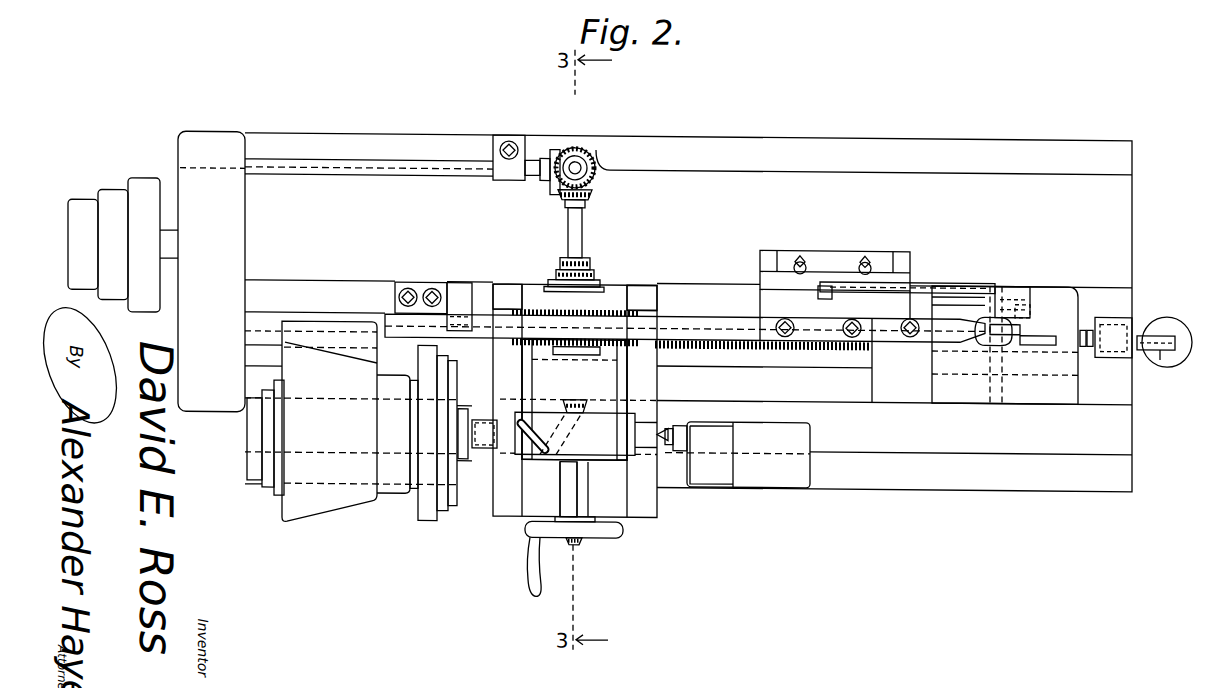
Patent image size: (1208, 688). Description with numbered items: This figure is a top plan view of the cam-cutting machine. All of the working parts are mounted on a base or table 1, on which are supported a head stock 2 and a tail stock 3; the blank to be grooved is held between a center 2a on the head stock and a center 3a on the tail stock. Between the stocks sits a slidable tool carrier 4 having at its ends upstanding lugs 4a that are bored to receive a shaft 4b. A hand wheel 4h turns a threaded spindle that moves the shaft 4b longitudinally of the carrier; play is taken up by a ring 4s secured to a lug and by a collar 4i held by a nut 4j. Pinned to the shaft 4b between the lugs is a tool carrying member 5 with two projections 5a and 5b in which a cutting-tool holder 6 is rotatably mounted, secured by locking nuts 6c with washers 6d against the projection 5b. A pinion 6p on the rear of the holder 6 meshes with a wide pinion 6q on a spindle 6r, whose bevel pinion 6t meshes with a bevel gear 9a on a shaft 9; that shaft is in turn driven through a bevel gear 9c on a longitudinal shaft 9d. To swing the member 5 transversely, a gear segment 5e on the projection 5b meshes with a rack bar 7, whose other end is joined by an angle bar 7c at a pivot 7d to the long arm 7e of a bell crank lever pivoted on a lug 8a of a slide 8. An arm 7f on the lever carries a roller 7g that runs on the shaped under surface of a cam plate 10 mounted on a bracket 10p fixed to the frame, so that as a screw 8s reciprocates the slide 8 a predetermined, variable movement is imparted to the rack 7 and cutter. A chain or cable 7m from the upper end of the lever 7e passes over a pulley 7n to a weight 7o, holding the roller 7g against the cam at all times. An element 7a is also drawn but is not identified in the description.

The base or table 1 is at (830, 151).
The head stock 2 is at (401, 464).
The center on head stock 2a is at (485, 453).
The tail stock 3 is at (722, 469).
The center on tail stock 3a is at (667, 424).
The tool carrier 4 is at (510, 506).
The upstanding lugs 4a is at (616, 296).
The shaft 4b is at (562, 464).
The ring 4s is at (590, 520).
The collar 4i is at (588, 527).
The nut 4j is at (573, 547).
The hand wheel 4h is at (532, 588).
The tool carrying member 5 is at (622, 410).
The projection 5a is at (540, 385).
The projection 5b is at (594, 292).
The gear segment 5e is at (672, 285).
The cutting-tool holder 6 is at (586, 407).
The locking nuts 6c is at (577, 357).
The washers 6d is at (600, 287).
The pinion 6p is at (552, 278).
The pinion 6q is at (548, 271).
The spindle 6r is at (581, 228).
The bevel pinion 6t is at (553, 197).
The rack bar 7 is at (668, 327).
The bearing bracket 7a is at (463, 286).
The angle bar 7c is at (831, 339).
The pivotal connection 7d is at (1005, 346).
The long arm of bell crank lever 7e is at (1028, 308).
The arm 7f is at (955, 296).
The roller 7g is at (816, 292).
The chain or cable 7m is at (1040, 338).
The pulley 7n is at (1162, 356).
The weight 7o is at (1172, 321).
The slide 8 is at (1063, 399).
The lug 8a is at (1022, 284).
The screw 8s is at (776, 350).
The shaft 9 is at (592, 152).
The bevel gear 9a is at (576, 150).
The bevel gear 9c is at (555, 159).
The shaft 9d is at (392, 172).
The cam plate 10 is at (812, 288).
The bracket 10p is at (897, 280).